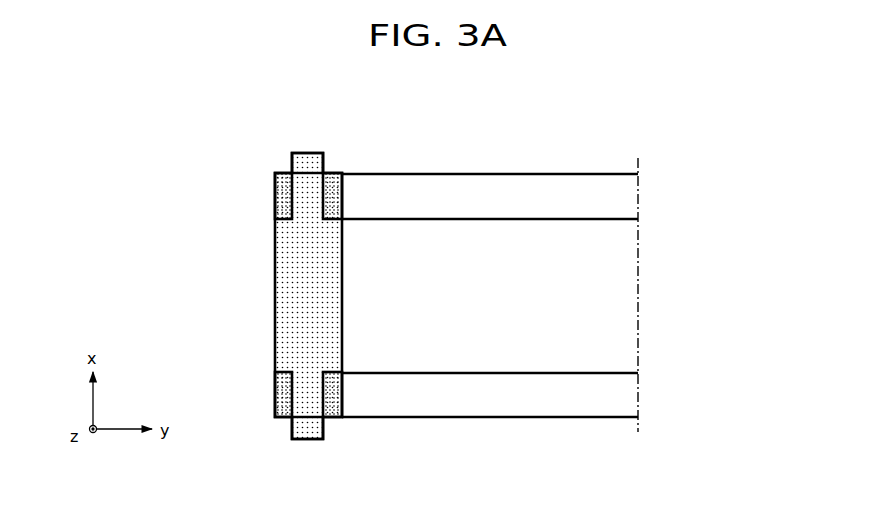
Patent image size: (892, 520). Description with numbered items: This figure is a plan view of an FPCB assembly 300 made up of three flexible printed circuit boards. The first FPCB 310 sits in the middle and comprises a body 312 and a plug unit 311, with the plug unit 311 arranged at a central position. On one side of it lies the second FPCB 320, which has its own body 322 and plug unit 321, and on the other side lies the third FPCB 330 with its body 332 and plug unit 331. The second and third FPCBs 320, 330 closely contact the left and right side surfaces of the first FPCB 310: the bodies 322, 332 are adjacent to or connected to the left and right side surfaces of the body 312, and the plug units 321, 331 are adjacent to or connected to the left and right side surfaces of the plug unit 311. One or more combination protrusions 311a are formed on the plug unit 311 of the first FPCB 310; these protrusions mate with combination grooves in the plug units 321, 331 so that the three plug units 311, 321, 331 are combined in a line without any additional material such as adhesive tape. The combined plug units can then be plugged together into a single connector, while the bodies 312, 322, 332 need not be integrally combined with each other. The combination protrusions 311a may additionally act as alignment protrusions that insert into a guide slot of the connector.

The FPCB assembly 300 is at (420, 299).
The first FPCB 310 is at (602, 295).
The plug unit of the first FPCB 311 is at (280, 296).
The combination protrusion 311a is at (297, 163).
The body of the first FPCB 312 is at (503, 309).
The second FPCB 320 is at (506, 427).
The plug unit of the second FPCB 321 is at (333, 410).
The body of the second FPCB 322 is at (528, 404).
The third FPCB 330 is at (506, 167).
The plug unit of the third FPCB 331 is at (334, 177).
The body of the third FPCB 332 is at (518, 186).